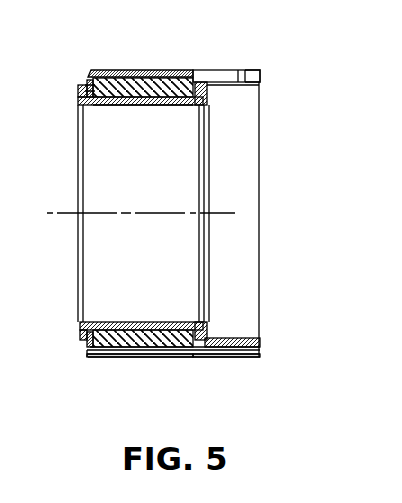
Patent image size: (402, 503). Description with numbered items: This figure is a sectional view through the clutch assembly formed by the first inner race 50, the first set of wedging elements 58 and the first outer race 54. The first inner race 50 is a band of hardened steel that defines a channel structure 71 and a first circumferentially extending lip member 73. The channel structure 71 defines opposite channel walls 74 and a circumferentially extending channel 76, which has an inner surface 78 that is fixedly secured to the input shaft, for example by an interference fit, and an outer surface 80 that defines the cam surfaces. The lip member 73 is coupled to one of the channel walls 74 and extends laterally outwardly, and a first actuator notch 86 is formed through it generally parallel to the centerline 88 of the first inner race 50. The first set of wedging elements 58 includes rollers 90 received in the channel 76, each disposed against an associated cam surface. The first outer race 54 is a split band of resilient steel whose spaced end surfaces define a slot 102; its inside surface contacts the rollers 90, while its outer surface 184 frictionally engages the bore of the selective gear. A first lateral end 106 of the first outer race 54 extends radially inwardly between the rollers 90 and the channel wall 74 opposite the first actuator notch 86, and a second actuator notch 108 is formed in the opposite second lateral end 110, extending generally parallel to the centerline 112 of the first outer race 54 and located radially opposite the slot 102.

The first inner race 50 is at (95, 108).
The first outer race 54 is at (132, 70).
The first set of wedging elements 58 is at (105, 352).
The channel structure 71 is at (140, 322).
The first circumferentially extending lip member 73 is at (245, 338).
The channel walls 74 is at (80, 328).
The circumferentially extending channel 76 is at (175, 104).
The inner surface 78 is at (112, 104).
The outer surface 80 is at (137, 103).
The first actuator notch 86 is at (252, 84).
The centerline 88 is at (191, 197).
The centerline 112 is at (218, 213).
The rollers 90 is at (127, 349).
The slot 102 is at (248, 350).
The first lateral end 106 is at (88, 77).
The second actuator notch 108 is at (206, 72).
The second lateral end 110 is at (260, 73).
The outer surface 184 is at (109, 70).